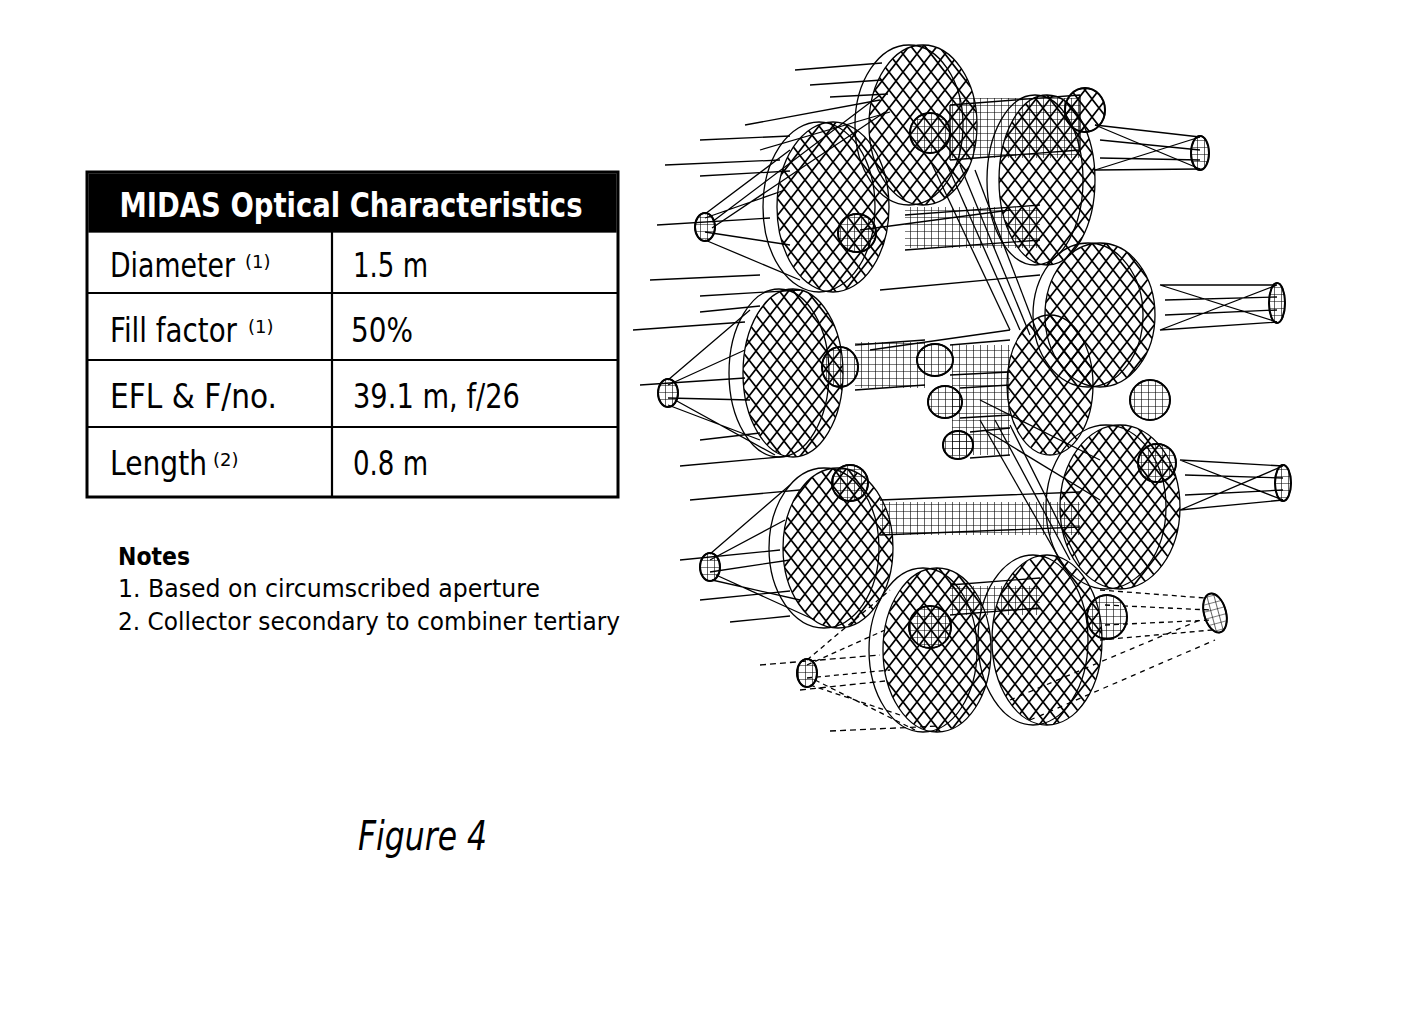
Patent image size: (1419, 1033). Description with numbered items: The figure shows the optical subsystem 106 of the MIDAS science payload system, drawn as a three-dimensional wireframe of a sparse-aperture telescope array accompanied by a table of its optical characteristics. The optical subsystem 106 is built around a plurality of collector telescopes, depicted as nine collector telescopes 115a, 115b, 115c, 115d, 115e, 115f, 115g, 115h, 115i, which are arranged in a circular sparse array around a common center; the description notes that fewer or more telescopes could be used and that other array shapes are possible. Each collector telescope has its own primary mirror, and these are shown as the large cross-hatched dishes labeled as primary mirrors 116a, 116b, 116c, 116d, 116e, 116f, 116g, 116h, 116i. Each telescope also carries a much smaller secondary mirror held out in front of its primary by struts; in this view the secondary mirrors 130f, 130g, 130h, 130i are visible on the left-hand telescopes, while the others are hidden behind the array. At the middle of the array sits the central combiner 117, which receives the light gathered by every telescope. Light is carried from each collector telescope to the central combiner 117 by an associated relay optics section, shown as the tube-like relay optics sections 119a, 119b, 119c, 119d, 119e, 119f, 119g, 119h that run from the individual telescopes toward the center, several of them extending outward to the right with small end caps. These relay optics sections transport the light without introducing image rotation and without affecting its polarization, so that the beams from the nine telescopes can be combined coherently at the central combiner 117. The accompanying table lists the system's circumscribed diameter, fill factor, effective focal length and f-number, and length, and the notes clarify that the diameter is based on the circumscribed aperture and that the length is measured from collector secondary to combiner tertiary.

The optical subsystem 106 is at (1289, 714).
The collector telescope 115a is at (952, 63).
The collector telescope 115b is at (1098, 145).
The collector telescope 115c is at (1141, 252).
The collector telescope 115d is at (1175, 542).
The collector telescope 115e is at (1087, 719).
The collector telescope 115f is at (941, 742).
The collector telescope 115g is at (808, 625).
The collector telescope 115h is at (746, 426).
The collector telescope 115i is at (790, 135).
The primary mirror 116a is at (924, 68).
The primary mirror 116b is at (1041, 100).
The primary mirror 116c is at (1158, 420).
The primary mirror 116d is at (1172, 530).
The primary mirror 116e is at (1098, 678).
The primary mirror 116f is at (970, 737).
The primary mirror 116g is at (803, 587).
The primary mirror 116h is at (763, 427).
The primary mirror 116i is at (810, 236).
The central combiner 117 is at (923, 418).
The relay optics section 119a is at (1003, 85).
The relay optics section 119b is at (1228, 153).
The relay optics section 119c is at (1300, 305).
The relay optics section 119d is at (905, 232).
The relay optics section 119e is at (1169, 645).
The relay optics section 119f is at (990, 560).
The relay optics section 119g is at (933, 510).
The relay optics section 119h is at (875, 326).
The secondary mirror 130f is at (810, 687).
The secondary mirror 130g is at (697, 580).
The secondary mirror 130h is at (665, 403).
The secondary mirror 130i is at (692, 213).